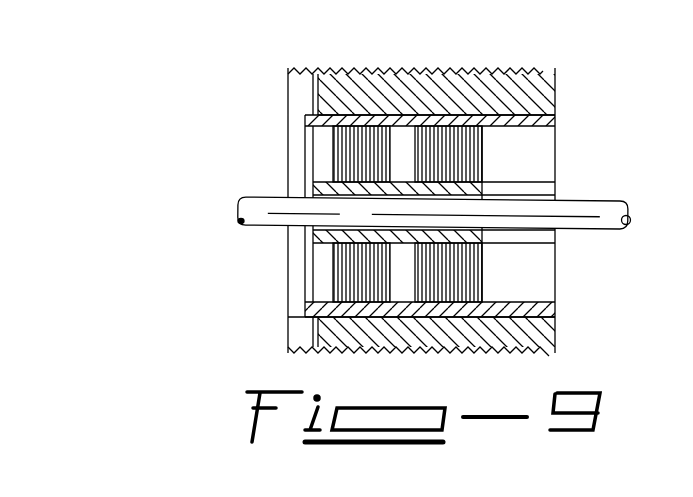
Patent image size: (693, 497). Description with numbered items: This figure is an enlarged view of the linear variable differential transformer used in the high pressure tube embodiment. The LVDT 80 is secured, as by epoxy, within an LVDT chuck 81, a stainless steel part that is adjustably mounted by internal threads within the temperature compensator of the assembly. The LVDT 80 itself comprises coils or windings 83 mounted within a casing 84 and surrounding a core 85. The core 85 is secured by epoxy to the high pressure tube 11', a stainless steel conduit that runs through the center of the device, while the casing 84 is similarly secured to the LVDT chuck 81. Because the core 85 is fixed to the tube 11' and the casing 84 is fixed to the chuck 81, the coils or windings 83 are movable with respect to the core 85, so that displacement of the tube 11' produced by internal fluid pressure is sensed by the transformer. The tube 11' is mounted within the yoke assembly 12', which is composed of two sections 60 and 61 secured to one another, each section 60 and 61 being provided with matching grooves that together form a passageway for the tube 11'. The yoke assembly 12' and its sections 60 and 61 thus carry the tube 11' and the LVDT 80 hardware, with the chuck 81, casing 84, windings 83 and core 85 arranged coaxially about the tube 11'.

The LVDT chuck 81 is at (535, 92).
The LVDT 80 is at (306, 163).
The casing 84 is at (314, 114).
The coils or windings 83 is at (457, 157).
The core 85 is at (446, 256).
The high pressure tube 11' is at (447, 194).
The yoke assembly 12' is at (42, 130).
The yoke section 60 is at (4, 193).
The yoke section 61 is at (5, 305).